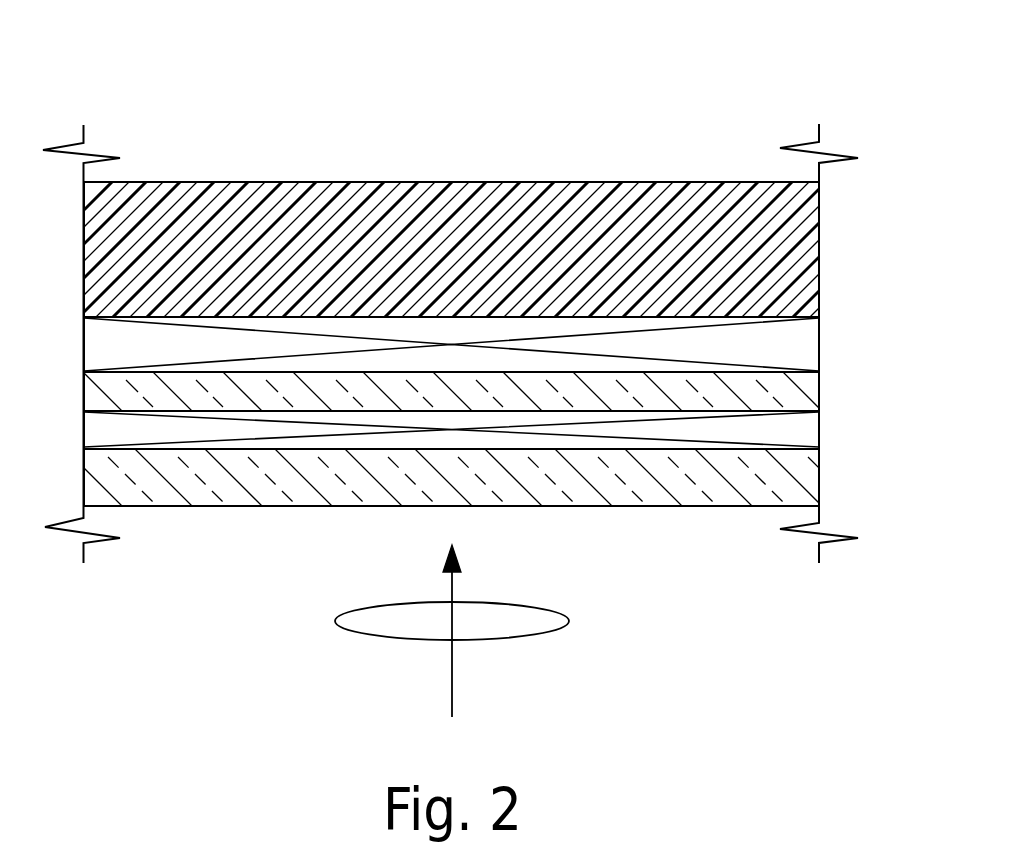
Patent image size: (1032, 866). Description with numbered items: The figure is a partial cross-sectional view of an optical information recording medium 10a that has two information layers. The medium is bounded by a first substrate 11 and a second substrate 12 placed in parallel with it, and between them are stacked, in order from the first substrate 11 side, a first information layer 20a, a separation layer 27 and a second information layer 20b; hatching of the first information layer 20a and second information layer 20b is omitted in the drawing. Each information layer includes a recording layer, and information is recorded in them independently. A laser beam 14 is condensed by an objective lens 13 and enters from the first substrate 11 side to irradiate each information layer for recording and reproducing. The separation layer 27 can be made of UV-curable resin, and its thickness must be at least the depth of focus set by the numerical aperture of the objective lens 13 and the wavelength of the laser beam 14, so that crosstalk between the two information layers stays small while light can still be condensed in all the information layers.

The optical information recording medium 10a is at (97, 106).
The first substrate 11 is at (819, 478).
The second substrate 12 is at (819, 237).
The first information layer 20a is at (819, 430).
The second information layer 20b is at (819, 345).
The separation layer 27 is at (819, 390).
The objective lens 13 is at (569, 620).
The laser beam 14 is at (452, 697).